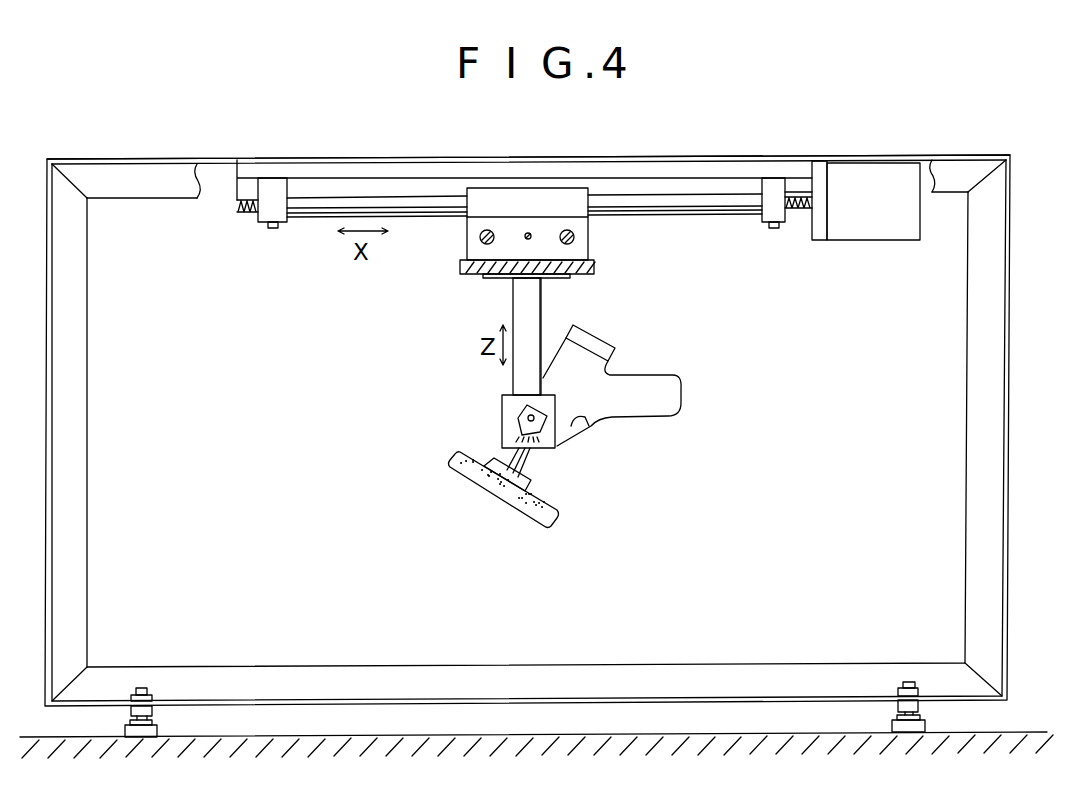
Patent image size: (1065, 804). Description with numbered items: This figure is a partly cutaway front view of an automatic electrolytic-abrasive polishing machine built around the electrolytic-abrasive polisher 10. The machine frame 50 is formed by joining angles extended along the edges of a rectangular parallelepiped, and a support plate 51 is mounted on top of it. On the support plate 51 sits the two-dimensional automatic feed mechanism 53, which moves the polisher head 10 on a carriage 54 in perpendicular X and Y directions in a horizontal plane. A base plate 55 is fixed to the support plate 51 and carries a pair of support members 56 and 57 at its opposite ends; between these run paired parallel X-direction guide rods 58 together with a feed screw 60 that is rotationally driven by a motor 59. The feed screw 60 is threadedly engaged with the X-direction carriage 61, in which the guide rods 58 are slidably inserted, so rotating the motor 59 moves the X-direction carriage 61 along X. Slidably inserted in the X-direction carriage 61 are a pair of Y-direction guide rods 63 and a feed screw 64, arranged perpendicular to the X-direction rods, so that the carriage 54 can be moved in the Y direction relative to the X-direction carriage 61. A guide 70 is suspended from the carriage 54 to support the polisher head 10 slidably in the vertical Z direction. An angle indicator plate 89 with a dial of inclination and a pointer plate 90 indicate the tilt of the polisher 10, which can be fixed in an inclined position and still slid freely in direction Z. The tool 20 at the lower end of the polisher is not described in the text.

The electrolytic-abrasive polisher 10 is at (635, 428).
The polishing pad tool 20 is at (564, 531).
The machine frame 50 is at (998, 373).
The support plate 51 is at (691, 158).
The two-dimensional automatic feed mechanism 53 is at (308, 268).
The carriage 54 is at (524, 248).
The base plate 55 is at (426, 172).
The support member 56 is at (766, 226).
The support member 57 is at (268, 228).
The X-direction guide rods 58 is at (679, 205).
The motor 59 is at (868, 240).
The feed screw 60 is at (796, 212).
The X-direction carriage 61 is at (530, 200).
The Y-direction guide rods 63 is at (576, 239).
The feed screw 64 is at (526, 240).
The guide 70 is at (542, 301).
The angle indicator plate 89 is at (508, 406).
The pointer plate 90 is at (522, 432).